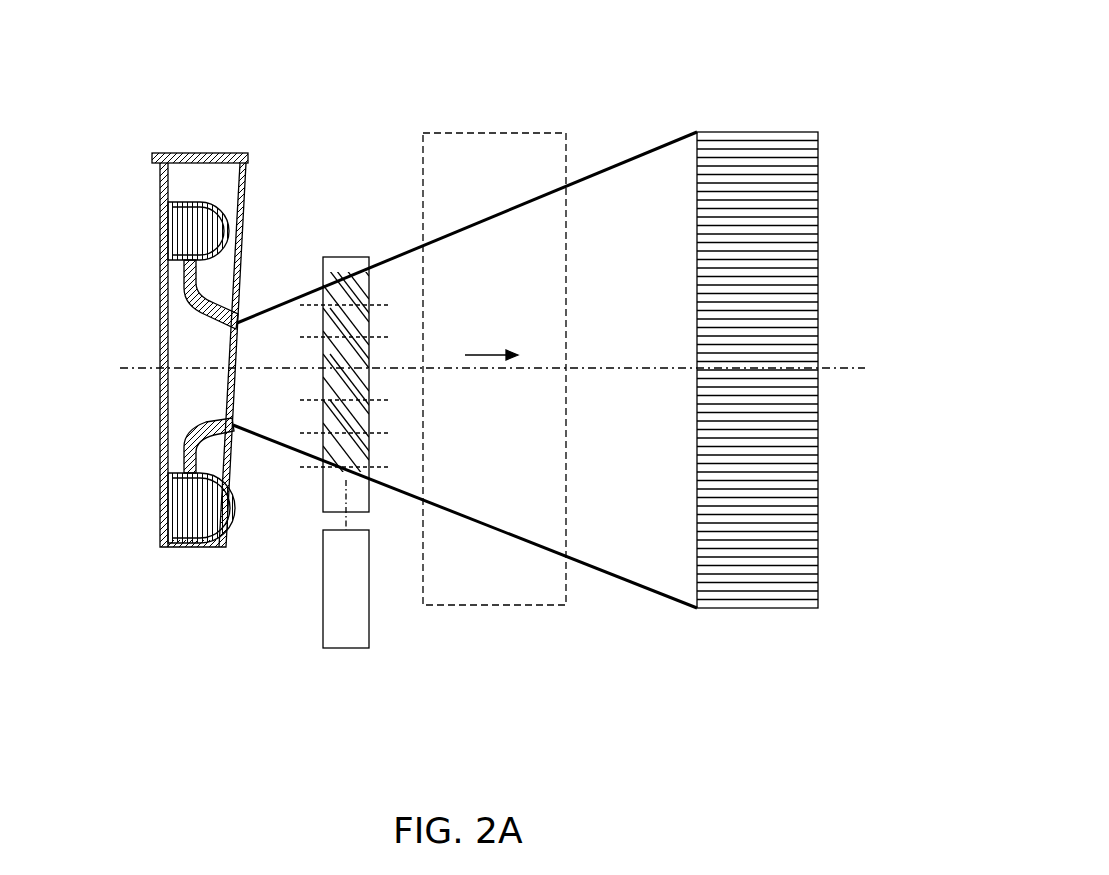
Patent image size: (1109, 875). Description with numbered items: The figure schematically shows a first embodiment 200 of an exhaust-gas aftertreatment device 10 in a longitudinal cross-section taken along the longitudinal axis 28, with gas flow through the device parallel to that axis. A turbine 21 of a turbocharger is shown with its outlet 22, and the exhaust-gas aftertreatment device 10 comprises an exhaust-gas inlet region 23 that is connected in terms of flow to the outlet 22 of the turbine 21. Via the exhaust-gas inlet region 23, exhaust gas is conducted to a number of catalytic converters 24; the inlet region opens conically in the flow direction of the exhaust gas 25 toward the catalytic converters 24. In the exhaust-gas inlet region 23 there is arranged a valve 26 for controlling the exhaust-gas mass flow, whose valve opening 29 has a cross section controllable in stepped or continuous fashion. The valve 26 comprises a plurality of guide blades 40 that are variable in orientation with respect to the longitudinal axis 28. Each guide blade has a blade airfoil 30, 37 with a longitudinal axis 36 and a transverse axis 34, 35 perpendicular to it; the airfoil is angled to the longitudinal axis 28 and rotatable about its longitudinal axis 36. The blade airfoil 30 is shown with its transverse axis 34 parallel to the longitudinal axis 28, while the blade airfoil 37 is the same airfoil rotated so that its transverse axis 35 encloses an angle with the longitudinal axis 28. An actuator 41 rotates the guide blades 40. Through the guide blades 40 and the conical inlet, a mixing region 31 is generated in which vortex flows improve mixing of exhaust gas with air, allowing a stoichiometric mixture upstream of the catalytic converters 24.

The first embodiment of exhaust-gas aftertreatment device 200 is at (862, 70).
The exhaust-gas aftertreatment device 10 is at (847, 171).
The turbine 21 is at (157, 175).
The outlet 22 is at (238, 338).
The exhaust-gas inlet region 23 is at (290, 450).
The catalytic converters 24 is at (815, 505).
The flow direction of the exhaust gas 25 is at (490, 352).
The valve 26 is at (348, 257).
The longitudinal axis 28 is at (613, 370).
The valve opening 29 is at (352, 326).
The blade airfoil 30 is at (370, 408).
The mixing region 31 is at (423, 158).
The transverse axis 34 is at (370, 395).
The transverse axis 35 is at (325, 395).
The longitudinal axis of blade airfoil 36 is at (325, 406).
The blade airfoil in rotated position 37 is at (375, 436).
The guide blades 40 is at (352, 300).
The actuator 41 is at (323, 645).